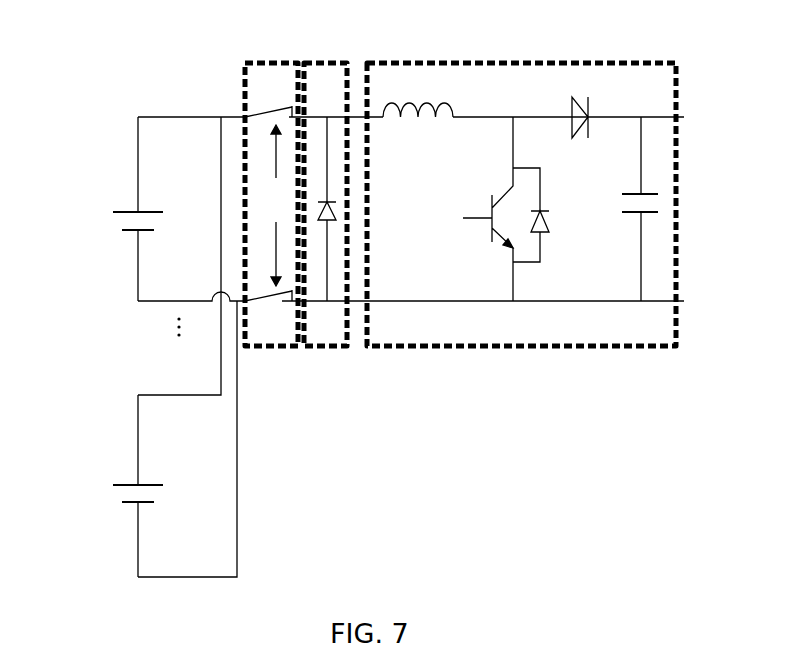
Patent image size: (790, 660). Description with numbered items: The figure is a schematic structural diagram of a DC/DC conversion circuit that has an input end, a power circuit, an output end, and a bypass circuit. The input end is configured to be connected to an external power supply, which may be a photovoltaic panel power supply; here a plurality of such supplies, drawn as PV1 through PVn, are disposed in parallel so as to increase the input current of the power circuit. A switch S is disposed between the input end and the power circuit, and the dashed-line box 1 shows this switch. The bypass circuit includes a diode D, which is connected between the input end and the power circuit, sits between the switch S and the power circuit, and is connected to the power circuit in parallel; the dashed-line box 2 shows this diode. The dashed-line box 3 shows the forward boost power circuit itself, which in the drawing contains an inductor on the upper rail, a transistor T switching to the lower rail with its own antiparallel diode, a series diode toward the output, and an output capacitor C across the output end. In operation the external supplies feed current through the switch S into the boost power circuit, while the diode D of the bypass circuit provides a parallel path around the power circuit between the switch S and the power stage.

The dashed-line box 1 is at (277, 239).
The dashed-line box 2 is at (318, 347).
The dashed-line box 3 is at (521, 239).
The switch S is at (268, 203).
The transistor T is at (506, 209).
The diode D is at (567, 111).
The capacitor C is at (626, 209).
The first photovoltaic module PV1 is at (111, 209).
The n-th photovoltaic module PVn is at (111, 486).